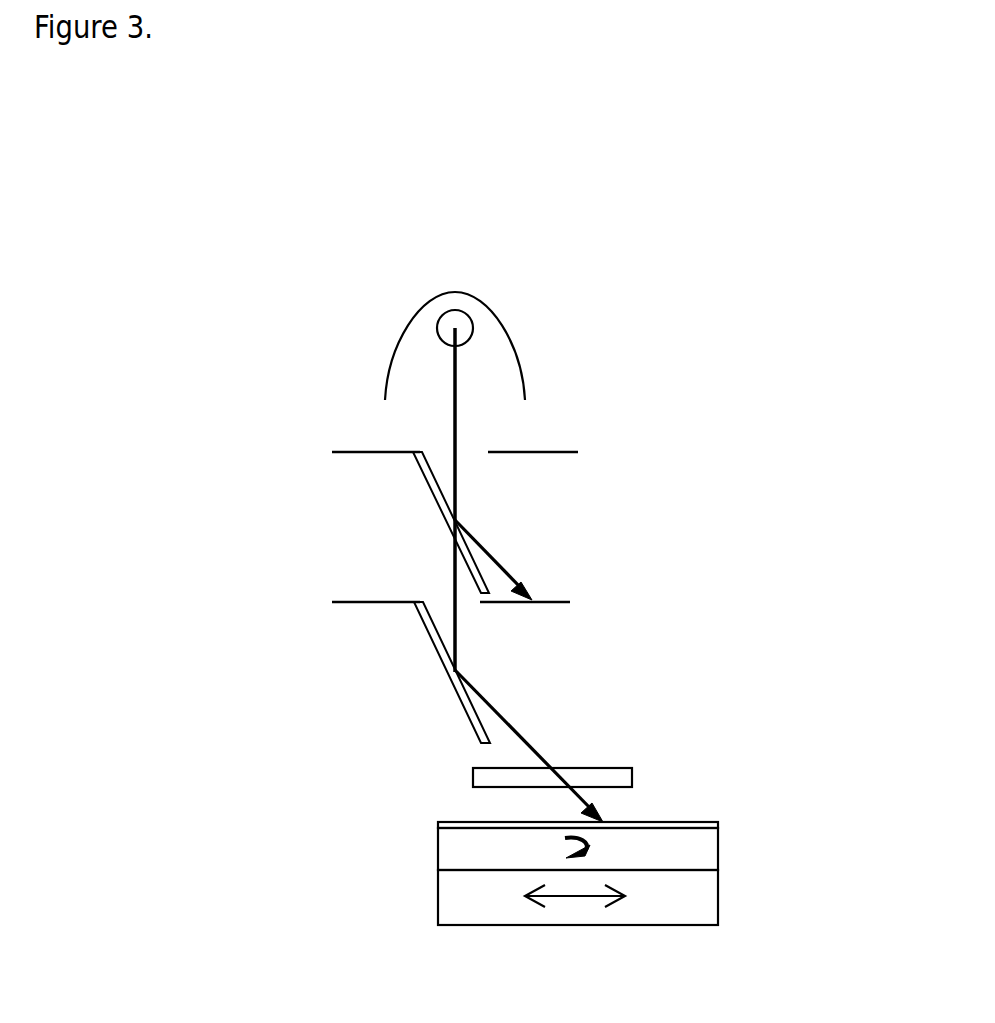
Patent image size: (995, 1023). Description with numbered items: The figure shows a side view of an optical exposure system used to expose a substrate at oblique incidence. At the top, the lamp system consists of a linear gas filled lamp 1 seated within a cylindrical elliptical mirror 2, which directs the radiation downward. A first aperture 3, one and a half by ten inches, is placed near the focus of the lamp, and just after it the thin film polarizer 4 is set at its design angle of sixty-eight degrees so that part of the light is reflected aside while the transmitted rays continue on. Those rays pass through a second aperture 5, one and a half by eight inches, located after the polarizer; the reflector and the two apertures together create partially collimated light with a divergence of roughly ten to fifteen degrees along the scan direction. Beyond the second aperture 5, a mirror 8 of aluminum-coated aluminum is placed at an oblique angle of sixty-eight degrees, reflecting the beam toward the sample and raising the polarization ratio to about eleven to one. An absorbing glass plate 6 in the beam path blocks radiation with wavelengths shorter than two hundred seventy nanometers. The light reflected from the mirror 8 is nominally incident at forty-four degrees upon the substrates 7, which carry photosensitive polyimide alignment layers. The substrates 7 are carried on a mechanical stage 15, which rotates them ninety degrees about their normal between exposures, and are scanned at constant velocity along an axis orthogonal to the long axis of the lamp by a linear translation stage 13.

The linear gas filled lamp 1 is at (454, 320).
The cylindrical elliptical mirror 2 is at (493, 307).
The first aperture 3 is at (350, 452).
The thin film polarizer 4 is at (412, 468).
The second aperture 5 is at (348, 602).
The absorbing glass plate 6 is at (632, 778).
The substrates 7 is at (710, 822).
The mirror 8 is at (444, 656).
The linear translation stage 13 is at (510, 903).
The mechanical stage 15 is at (680, 850).